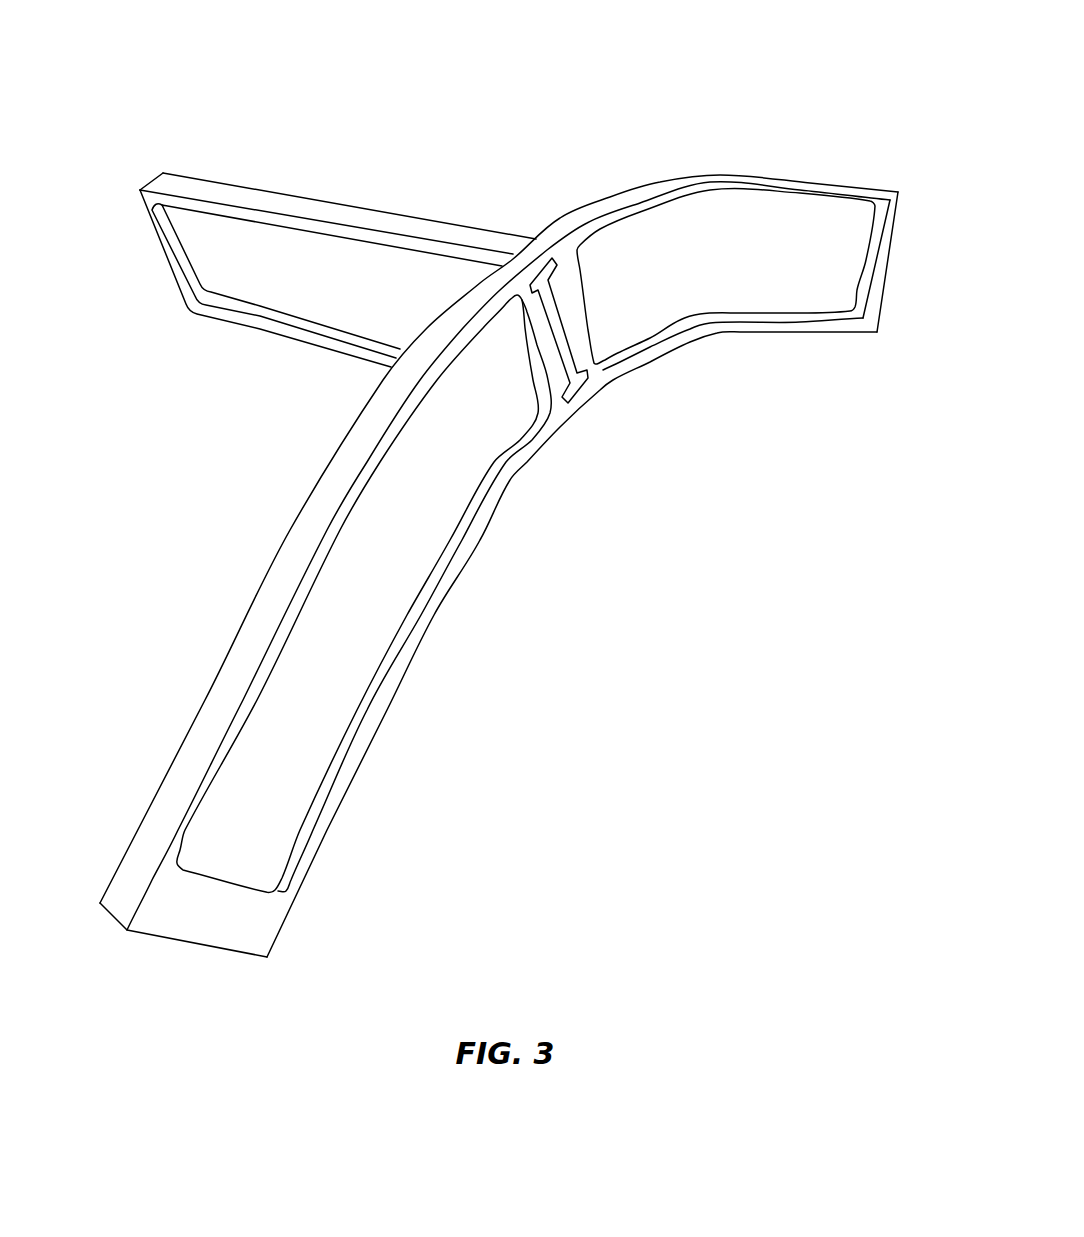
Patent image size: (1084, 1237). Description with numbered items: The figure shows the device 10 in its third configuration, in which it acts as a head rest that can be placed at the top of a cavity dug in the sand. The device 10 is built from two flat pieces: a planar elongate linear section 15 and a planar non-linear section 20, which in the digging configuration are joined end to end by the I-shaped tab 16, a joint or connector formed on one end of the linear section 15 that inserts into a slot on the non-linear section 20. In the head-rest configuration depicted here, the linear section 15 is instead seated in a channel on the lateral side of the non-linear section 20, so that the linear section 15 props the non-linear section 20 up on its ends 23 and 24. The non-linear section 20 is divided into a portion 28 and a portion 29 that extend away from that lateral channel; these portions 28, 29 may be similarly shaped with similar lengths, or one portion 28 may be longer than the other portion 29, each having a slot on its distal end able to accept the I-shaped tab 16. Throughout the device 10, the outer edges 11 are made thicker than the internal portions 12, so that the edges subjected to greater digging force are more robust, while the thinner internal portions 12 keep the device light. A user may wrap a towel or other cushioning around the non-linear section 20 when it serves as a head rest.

The device 10 is at (237, 83).
The outer edges 11 is at (224, 314).
The internal portions 12 is at (277, 290).
The planar elongate linear section 15 is at (306, 208).
The I-shaped tab 16 is at (583, 386).
The planar non-linear section 20 is at (750, 230).
The end 23 is at (240, 920).
The end 24 is at (872, 308).
The portion 28 is at (368, 645).
The portion 29 is at (793, 300).